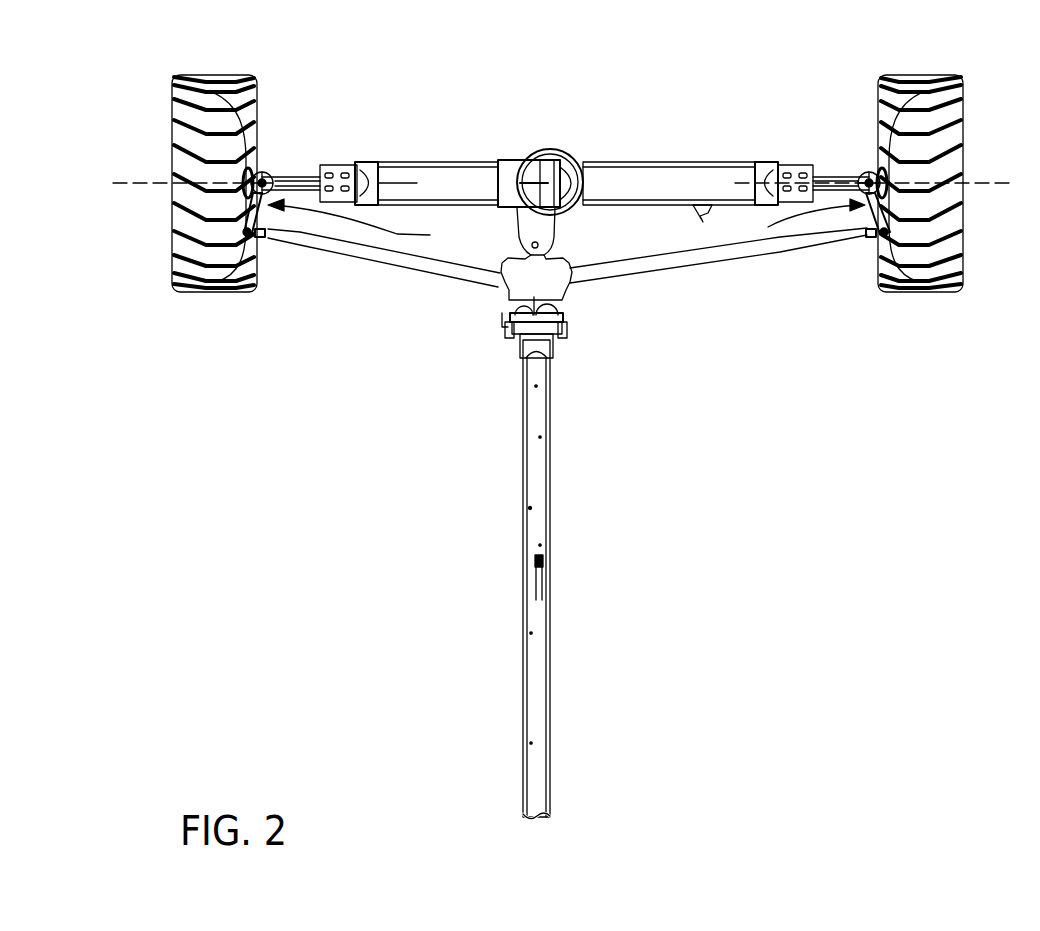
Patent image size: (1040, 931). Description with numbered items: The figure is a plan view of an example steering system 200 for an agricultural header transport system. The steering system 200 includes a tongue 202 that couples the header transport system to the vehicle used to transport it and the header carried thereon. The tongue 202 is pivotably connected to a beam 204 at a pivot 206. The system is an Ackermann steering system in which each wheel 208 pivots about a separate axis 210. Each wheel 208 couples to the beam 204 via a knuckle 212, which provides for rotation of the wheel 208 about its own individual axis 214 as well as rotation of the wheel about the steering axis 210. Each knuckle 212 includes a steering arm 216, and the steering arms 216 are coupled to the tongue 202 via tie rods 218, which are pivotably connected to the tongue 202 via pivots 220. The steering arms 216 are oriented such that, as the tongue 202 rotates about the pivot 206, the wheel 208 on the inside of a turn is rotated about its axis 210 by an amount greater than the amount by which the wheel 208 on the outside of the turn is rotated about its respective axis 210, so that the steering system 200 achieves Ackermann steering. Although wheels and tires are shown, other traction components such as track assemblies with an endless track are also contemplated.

The steering system 200 is at (690, 450).
The tongue 202 is at (538, 683).
The beam 204 is at (449, 176).
The pivot 206 is at (555, 243).
The wheel 208 is at (180, 250).
The axis 210 is at (260, 175).
The knuckle 212 is at (566, 224).
The individual axis 214 is at (133, 178).
The steering arm 216 is at (268, 218).
The tie rod 218 is at (398, 258).
The pivot 220 is at (268, 236).